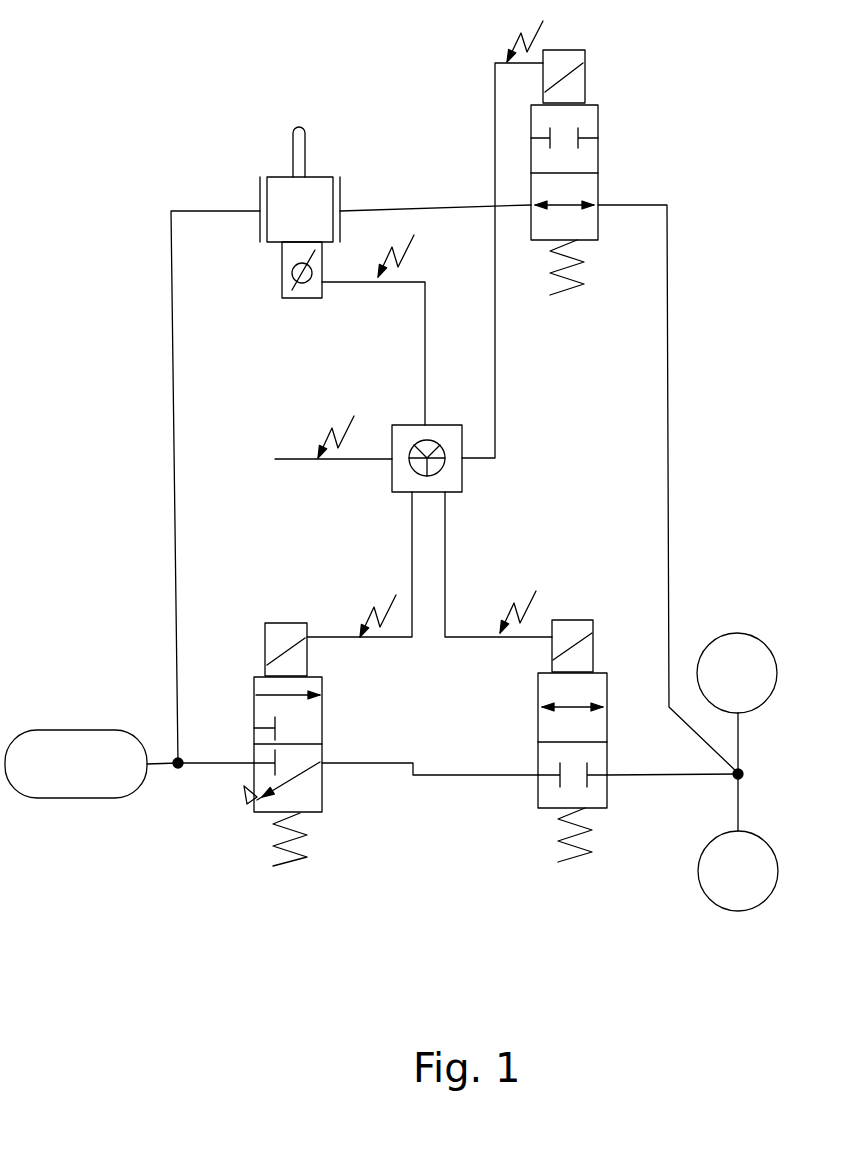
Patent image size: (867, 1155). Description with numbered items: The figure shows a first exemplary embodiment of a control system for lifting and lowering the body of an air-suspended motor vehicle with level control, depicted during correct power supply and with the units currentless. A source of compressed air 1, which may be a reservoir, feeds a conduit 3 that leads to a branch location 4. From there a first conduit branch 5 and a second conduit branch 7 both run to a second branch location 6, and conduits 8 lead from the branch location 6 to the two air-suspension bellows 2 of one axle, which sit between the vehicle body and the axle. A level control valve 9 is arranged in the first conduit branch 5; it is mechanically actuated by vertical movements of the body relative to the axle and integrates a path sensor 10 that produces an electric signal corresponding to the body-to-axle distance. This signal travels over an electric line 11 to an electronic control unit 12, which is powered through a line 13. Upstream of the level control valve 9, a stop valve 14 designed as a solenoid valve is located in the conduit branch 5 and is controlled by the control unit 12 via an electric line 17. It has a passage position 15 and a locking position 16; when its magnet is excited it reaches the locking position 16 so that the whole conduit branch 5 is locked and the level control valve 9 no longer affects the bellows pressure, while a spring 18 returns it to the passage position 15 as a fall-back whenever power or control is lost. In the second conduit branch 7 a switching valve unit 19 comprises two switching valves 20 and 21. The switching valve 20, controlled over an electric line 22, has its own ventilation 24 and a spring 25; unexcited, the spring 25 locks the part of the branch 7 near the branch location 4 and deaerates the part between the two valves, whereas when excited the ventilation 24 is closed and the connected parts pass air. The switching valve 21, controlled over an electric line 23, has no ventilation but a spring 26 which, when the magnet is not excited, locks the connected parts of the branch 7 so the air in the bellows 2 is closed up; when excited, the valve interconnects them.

The source of compressed air 1 is at (63, 777).
The air-suspension bellows 2 is at (747, 652).
The conduit 3 is at (158, 765).
The branch location 4 is at (177, 767).
The first conduit branch 5 is at (400, 207).
The second branch location 6 is at (738, 774).
The second conduit branch 7 is at (203, 765).
The conduits 8 is at (742, 730).
The level control valve 9 is at (250, 150).
The path sensor 10 is at (268, 268).
The electric line 11 is at (430, 358).
The electronic control unit 12 is at (475, 473).
The line 13 is at (350, 460).
The stop valve 14 is at (670, 163).
The passage position 15 is at (577, 187).
The locking position 16 is at (577, 122).
The electric line 17 is at (495, 127).
The spring 18 is at (590, 263).
The switching valve unit 19 is at (300, 613).
The switching valve 20 is at (305, 769).
The switching valve 21 is at (552, 763).
The electric line 22 is at (412, 533).
The electric line 23 is at (447, 533).
The ventilation 24 is at (247, 800).
The spring 25 is at (292, 860).
The spring 26 is at (583, 850).